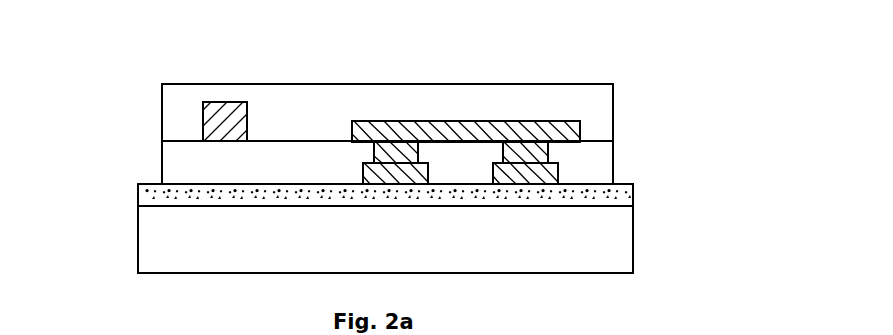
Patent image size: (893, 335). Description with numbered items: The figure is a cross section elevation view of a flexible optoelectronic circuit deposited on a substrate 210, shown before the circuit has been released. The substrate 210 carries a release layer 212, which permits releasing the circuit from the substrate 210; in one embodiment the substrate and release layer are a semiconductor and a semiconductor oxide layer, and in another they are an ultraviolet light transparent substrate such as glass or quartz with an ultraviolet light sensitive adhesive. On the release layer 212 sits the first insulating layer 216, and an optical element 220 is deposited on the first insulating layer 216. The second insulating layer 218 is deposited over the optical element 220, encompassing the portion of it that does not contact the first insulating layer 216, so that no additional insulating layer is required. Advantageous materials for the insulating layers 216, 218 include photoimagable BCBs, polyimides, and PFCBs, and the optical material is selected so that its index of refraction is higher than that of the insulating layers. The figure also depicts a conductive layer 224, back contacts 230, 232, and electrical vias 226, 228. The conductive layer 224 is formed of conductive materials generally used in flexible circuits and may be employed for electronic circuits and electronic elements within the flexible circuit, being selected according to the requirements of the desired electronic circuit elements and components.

The substrate 210 is at (622, 247).
The release layer 212 is at (628, 193).
The first insulating layer 216 is at (165, 162).
The second insulating layer 218 is at (163, 105).
The optical element 220 is at (228, 105).
The conductive layer 224 is at (605, 113).
The electrical via 226 is at (548, 153).
The electrical via 228 is at (418, 140).
The back contact 230 is at (393, 128).
The back contact 232 is at (558, 173).